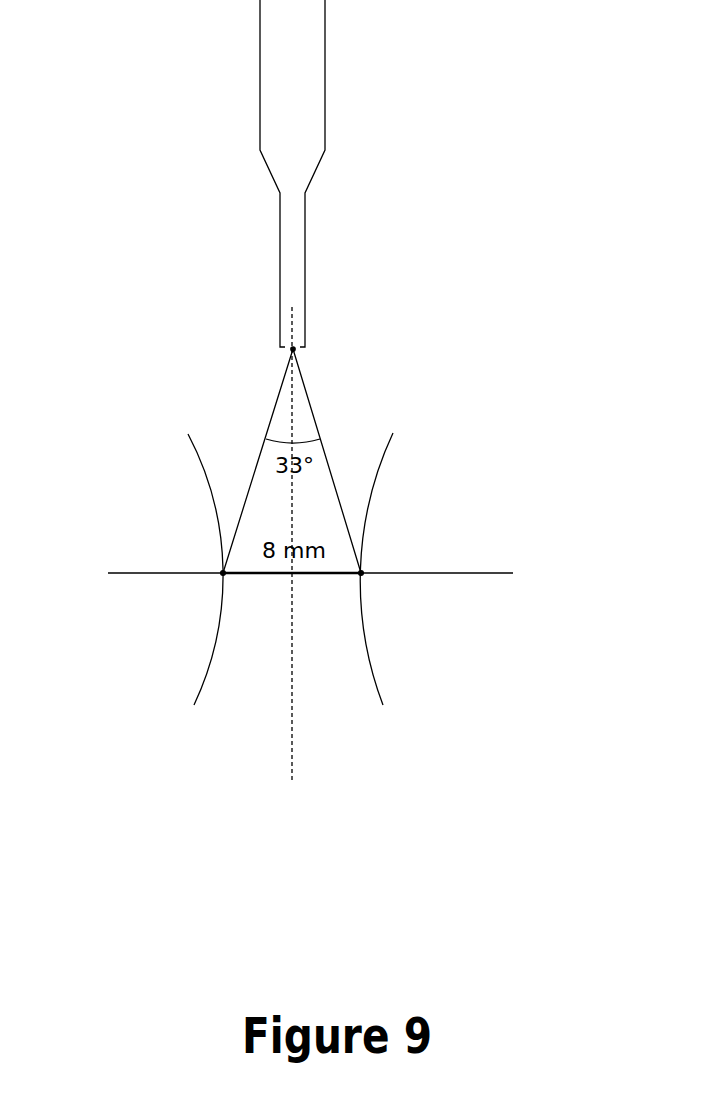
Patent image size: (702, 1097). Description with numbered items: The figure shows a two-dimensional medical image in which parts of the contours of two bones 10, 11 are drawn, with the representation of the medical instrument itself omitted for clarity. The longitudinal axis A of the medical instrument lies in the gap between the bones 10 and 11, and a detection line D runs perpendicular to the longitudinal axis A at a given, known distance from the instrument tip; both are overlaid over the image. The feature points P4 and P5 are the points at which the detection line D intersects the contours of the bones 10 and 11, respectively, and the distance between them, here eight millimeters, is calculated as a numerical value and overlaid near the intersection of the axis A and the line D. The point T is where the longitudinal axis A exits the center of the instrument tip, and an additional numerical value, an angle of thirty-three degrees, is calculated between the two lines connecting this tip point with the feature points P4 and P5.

The bone 10 is at (198, 467).
The bone 11 is at (387, 460).
The point T is at (293, 349).
The feature point P4 is at (223, 573).
The feature point P5 is at (361, 573).
The detection line D is at (460, 575).
The longitudinal axis A is at (292, 723).